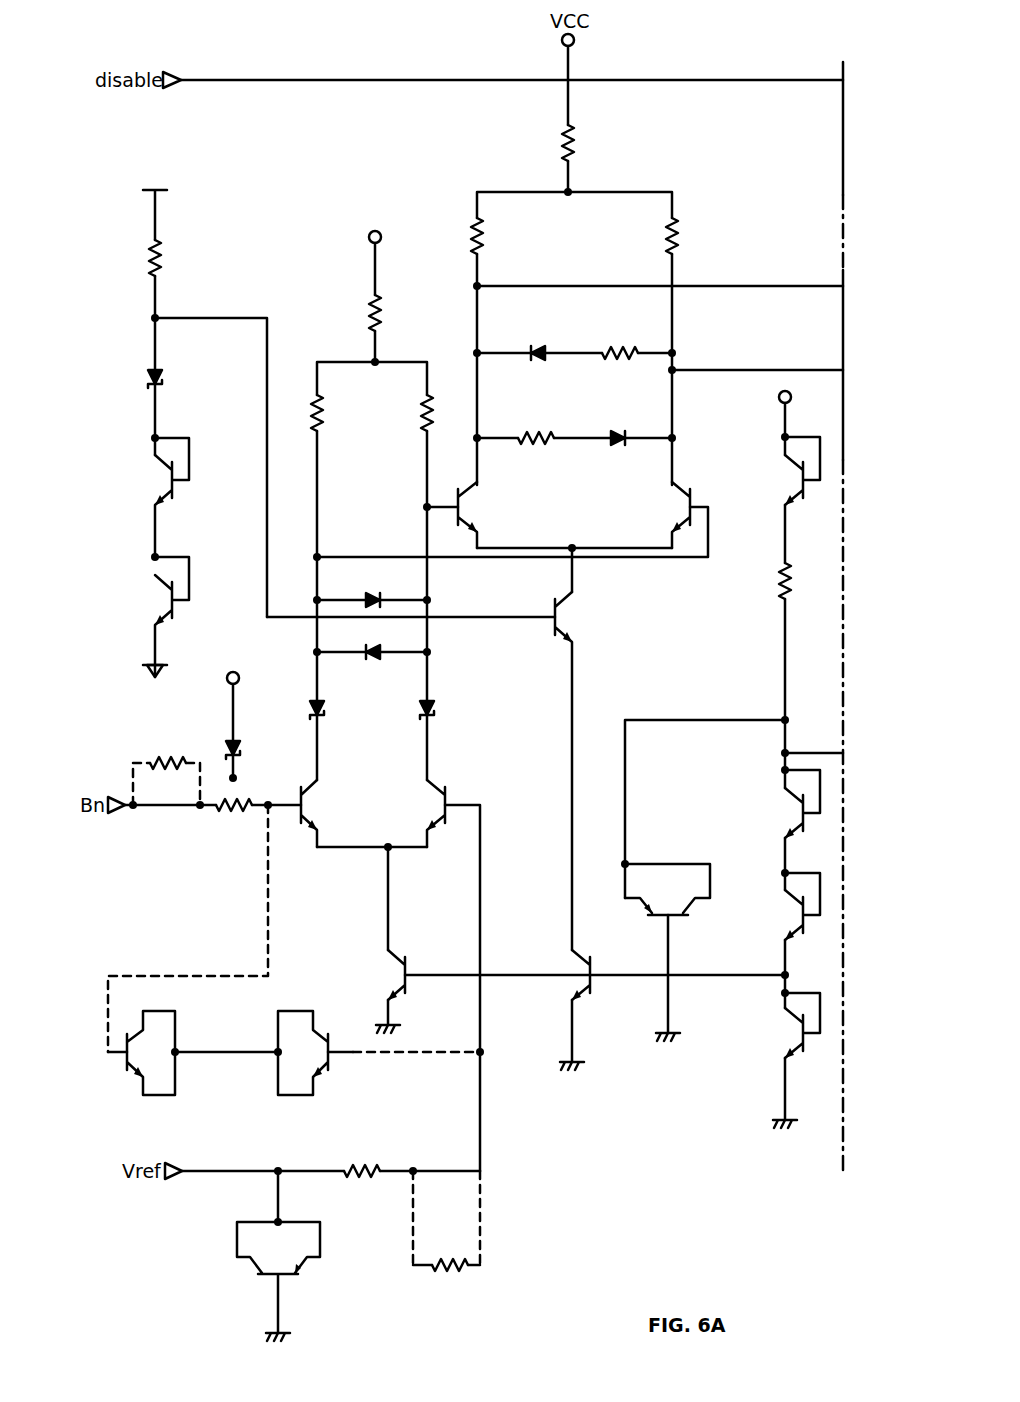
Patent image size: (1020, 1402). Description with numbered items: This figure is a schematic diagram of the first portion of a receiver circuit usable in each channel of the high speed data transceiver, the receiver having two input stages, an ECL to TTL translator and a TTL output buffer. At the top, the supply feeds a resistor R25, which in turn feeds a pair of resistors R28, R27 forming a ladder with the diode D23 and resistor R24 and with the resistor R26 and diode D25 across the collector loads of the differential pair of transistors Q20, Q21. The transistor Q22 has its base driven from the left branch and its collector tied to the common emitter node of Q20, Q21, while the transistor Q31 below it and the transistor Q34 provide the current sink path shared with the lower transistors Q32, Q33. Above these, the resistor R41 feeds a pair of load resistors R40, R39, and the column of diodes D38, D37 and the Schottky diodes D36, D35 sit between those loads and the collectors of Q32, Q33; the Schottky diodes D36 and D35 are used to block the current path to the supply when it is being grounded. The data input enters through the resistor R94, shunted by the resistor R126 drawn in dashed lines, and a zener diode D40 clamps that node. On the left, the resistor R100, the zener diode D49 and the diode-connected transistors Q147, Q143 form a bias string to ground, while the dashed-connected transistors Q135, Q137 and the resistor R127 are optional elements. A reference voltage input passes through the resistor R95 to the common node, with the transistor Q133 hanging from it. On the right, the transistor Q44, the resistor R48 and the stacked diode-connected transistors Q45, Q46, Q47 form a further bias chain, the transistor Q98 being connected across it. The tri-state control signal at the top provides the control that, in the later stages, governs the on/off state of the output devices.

The resistor R100 is at (184, 258).
The resistor R41 is at (397, 313).
The resistor R25 is at (592, 143).
The resistor R28 is at (499, 236).
The resistor R27 is at (693, 236).
The resistor R24 is at (619, 339).
The resistor R26 is at (537, 425).
The resistor R40 is at (339, 413).
The resistor R39 is at (448, 413).
The resistor R48 is at (766, 581).
The resistor R126 is at (172, 750).
The resistor R94 is at (233, 817).
The resistor R95 is at (361, 1157).
The resistor R127 is at (449, 1251).
The diode D23 is at (541, 340).
The diode D25 is at (622, 426).
The diode D38 is at (371, 587).
The diode D37 is at (374, 661).
The zener diode D49 is at (177, 377).
The zener diode D40 is at (256, 748).
The Schottky diode D36 is at (340, 708).
The Schottky diode D35 is at (451, 708).
The transistor Q20 is at (479, 515).
The transistor Q21 is at (667, 515).
The transistor Q22 is at (580, 771).
The transistor Q31 is at (564, 975).
The transistor Q34 is at (381, 975).
The transistor Q32 is at (325, 813).
The transistor Q33 is at (424, 813).
The transistor Q44 is at (789, 471).
The transistor Q45 is at (789, 804).
The transistor Q46 is at (789, 906).
The transistor Q47 is at (789, 1025).
The transistor Q147 is at (153, 497).
The transistor Q143 is at (153, 611).
The transistor Q135 is at (127, 1060).
The transistor Q137 is at (329, 1060).
The transistor Q98 is at (667, 889).
The transistor Q133 is at (278, 1277).